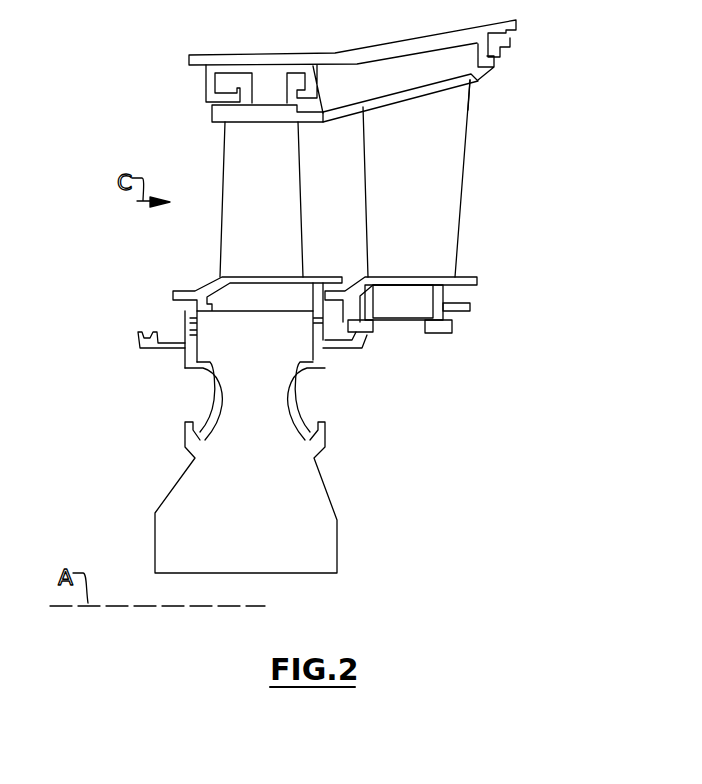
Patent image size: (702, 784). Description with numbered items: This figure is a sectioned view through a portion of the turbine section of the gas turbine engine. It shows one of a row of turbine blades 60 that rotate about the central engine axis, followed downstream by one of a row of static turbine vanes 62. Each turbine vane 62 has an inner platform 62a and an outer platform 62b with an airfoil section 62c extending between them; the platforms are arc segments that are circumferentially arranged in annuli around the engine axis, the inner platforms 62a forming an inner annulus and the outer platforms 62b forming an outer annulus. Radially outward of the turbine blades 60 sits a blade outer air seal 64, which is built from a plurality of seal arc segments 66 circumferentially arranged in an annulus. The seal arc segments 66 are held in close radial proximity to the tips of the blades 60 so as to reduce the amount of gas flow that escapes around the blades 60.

The turbine blades 60 is at (222, 247).
The turbine vanes 62 is at (452, 245).
The inner platform 62a is at (462, 277).
The outer platform 62b is at (478, 77).
The airfoil section 62c is at (468, 153).
The blade outer air seal 64 is at (196, 106).
The seal arc segments 66 is at (227, 112).